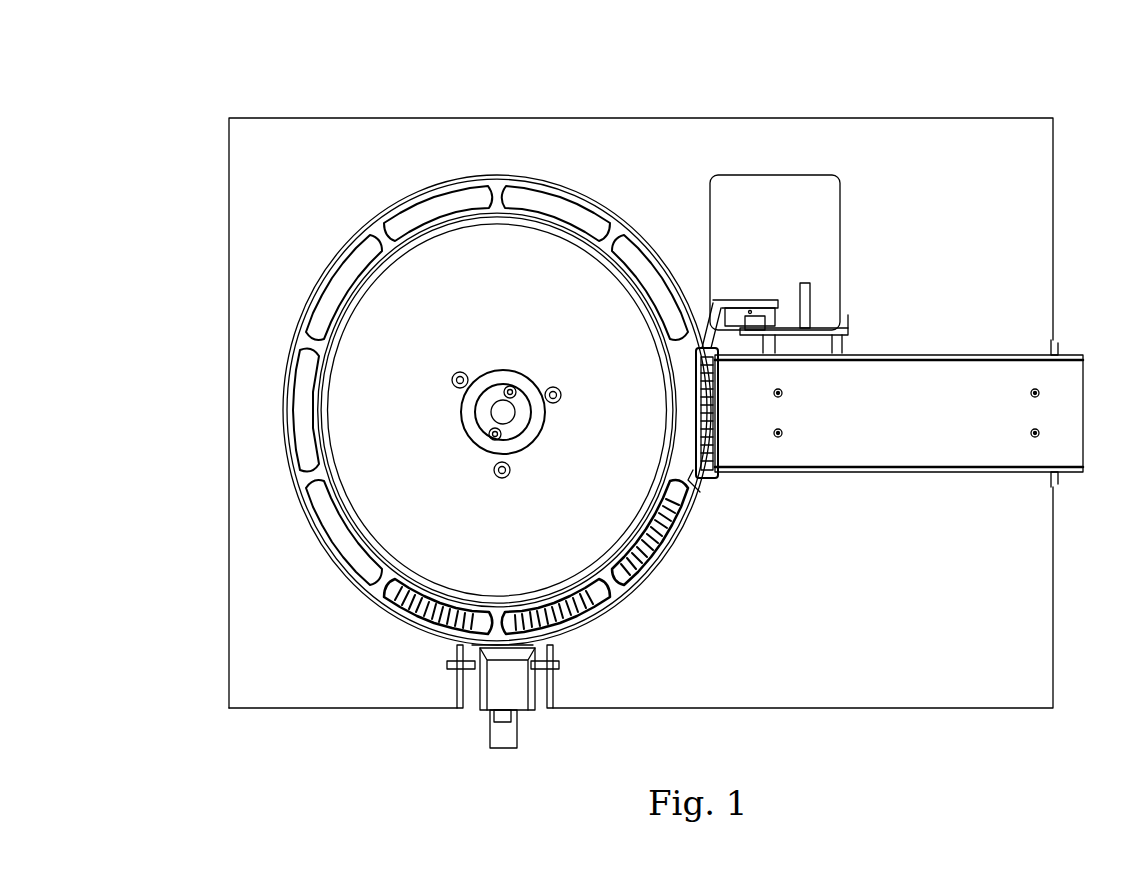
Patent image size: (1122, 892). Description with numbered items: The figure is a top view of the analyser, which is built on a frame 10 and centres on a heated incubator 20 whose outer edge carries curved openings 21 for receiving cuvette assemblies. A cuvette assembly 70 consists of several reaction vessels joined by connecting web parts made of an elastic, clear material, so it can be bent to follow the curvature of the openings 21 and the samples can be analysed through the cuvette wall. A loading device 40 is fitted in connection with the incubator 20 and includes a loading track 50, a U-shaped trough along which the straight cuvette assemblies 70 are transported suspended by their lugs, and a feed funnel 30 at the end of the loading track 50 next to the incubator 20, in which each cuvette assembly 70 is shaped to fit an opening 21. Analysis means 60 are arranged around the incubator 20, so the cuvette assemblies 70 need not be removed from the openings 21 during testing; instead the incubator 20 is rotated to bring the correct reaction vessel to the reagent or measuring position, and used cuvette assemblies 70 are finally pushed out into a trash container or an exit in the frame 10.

The frame 10 is at (262, 172).
The heated incubator 20 is at (533, 275).
The openings 21 is at (300, 388).
The feed funnel 30 is at (688, 408).
The loading device 40 is at (750, 300).
The loading track 50 is at (913, 436).
The analysis means 60 is at (458, 721).
The cuvette assembly 70 is at (672, 553).